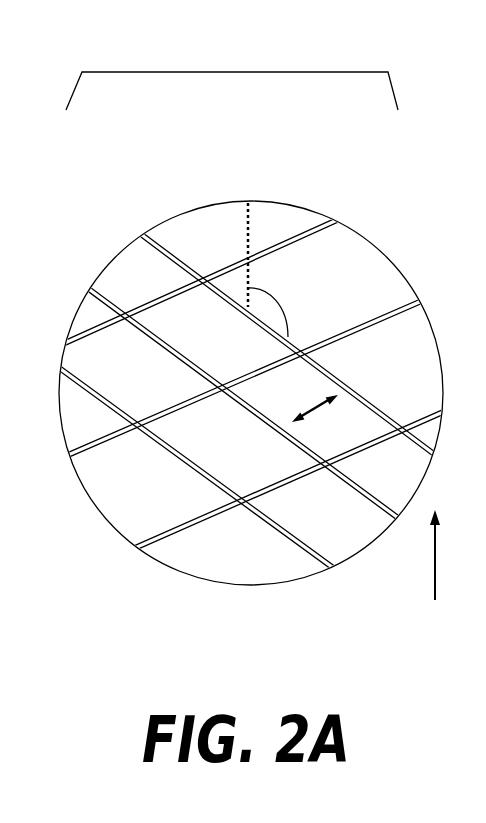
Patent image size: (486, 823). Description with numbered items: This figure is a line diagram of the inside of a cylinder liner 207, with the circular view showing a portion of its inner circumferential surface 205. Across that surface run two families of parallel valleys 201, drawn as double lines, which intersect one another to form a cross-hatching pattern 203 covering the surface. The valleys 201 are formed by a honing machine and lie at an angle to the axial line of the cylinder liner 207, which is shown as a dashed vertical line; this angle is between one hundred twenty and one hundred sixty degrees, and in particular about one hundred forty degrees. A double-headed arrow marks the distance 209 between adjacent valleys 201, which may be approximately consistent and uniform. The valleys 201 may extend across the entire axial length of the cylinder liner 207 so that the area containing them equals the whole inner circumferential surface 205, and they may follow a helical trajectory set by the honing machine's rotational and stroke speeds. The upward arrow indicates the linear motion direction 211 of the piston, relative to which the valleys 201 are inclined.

The valleys 201 is at (165, 248).
The cross-hatching pattern 203 is at (105, 525).
The inner circumferential surface 205 is at (240, 548).
The cylinder liner 207 is at (232, 65).
The distance between adjacent valleys 209 is at (320, 400).
The linear motion direction 211 is at (434, 550).